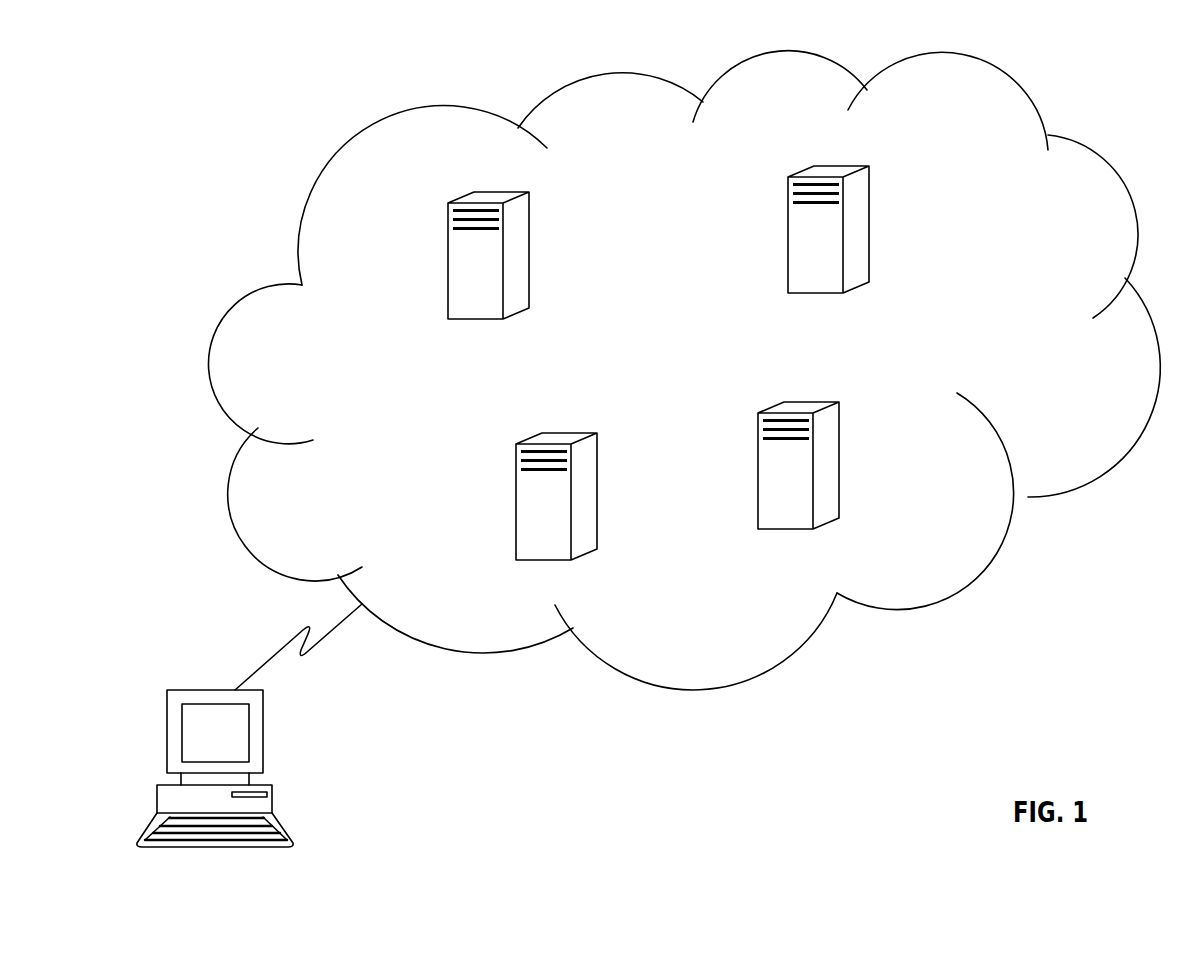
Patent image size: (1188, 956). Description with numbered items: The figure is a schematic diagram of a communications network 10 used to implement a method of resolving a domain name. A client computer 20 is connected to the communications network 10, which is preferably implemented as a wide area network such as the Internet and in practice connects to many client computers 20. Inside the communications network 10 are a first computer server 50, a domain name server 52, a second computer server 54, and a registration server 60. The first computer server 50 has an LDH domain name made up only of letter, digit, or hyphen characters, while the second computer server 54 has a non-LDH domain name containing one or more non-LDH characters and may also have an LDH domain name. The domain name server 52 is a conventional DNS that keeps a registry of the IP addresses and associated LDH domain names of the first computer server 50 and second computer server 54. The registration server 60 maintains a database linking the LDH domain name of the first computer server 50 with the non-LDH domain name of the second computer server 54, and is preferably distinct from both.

The communications network 10 is at (1028, 518).
The client computer 20 is at (265, 784).
The first computer server 50 is at (514, 272).
The domain name server 52 is at (854, 246).
The second computer server 54 is at (582, 513).
The registration server 60 is at (824, 482).